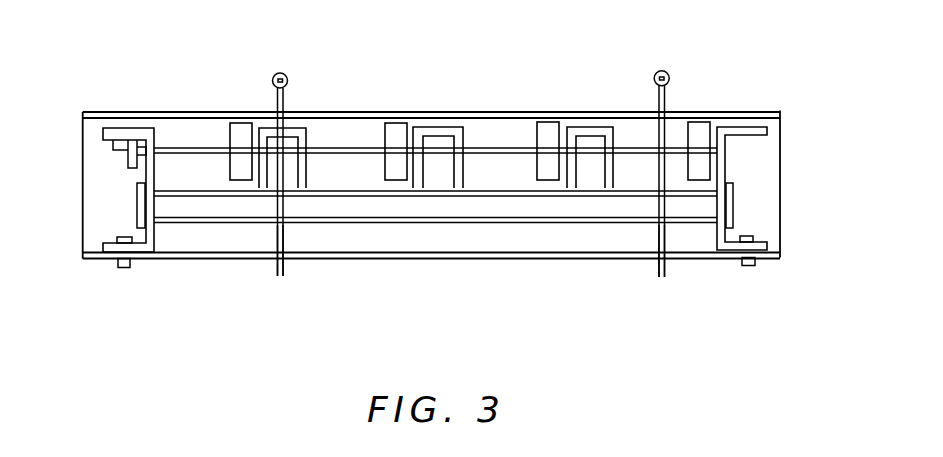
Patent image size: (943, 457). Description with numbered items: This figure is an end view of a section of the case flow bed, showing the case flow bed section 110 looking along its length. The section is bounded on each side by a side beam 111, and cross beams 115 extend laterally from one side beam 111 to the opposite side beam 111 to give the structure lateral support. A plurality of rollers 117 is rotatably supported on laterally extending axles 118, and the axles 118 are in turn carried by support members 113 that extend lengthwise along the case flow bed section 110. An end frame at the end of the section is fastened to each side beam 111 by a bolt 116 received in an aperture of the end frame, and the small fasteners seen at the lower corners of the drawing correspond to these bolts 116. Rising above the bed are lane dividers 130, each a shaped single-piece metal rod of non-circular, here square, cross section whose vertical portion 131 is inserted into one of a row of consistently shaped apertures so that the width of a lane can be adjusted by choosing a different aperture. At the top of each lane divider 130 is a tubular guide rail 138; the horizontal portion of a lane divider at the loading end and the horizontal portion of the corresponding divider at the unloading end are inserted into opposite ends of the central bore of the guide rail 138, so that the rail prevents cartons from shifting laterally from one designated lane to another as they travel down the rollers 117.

The case flow bed section 110 is at (431, 194).
The side beam 111 is at (143, 173).
The support member 113 is at (445, 123).
The cross beam 115 is at (350, 222).
The bolt 116 is at (123, 237).
The roller 117 is at (230, 112).
The axle 118 is at (343, 140).
The lane divider 130 is at (277, 97).
The vertical portion 131 is at (278, 245).
The tubular guide rail 138 is at (287, 72).